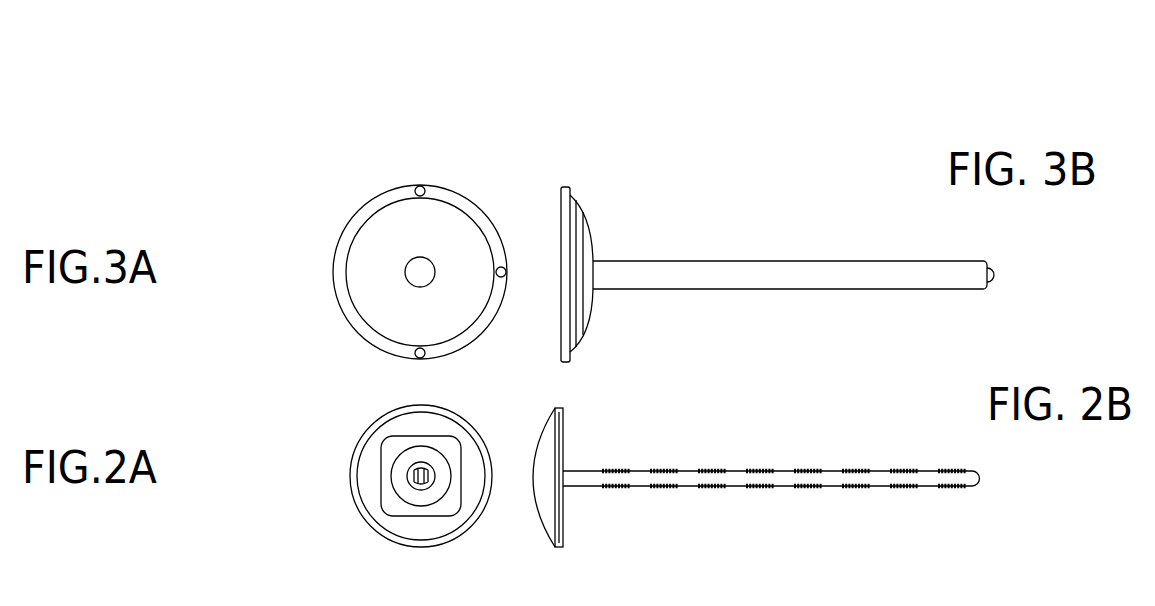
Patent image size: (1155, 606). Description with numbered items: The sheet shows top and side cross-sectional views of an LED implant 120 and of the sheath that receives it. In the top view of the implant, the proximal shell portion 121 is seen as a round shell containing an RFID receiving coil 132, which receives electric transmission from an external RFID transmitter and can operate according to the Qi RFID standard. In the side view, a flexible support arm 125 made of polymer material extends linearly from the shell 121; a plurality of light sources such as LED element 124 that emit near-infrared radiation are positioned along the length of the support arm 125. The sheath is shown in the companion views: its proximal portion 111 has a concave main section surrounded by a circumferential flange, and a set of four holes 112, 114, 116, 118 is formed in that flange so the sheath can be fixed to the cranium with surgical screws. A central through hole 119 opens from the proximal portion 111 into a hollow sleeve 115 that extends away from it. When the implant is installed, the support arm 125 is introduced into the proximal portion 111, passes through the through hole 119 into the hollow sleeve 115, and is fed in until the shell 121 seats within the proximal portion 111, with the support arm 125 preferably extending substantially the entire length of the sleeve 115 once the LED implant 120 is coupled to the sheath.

In FIG. 3B, the proximal portion of the sheath 111 is at (587, 221).
In FIG. 3A, the hole 112 is at (424, 187).
In FIG. 3A, the hole 114 is at (338, 274).
In FIG. 3B, the hollow sleeve 115 is at (755, 259).
In FIG. 3A, the hole 116 is at (420, 357).
In FIG. 3A, the hole 118 is at (503, 268).
In FIG. 3A, the through hole 119 is at (417, 269).
In FIG. 3B, the LED implant 120 is at (607, 113).
In FIG. 2A, the proximal shell portion 121 is at (366, 420).
In FIG. 2B, the proximal shell portion 121 is at (567, 528).
In FIG. 2B, the LED element 124 is at (712, 467).
In FIG. 2B, the support arm 125 is at (784, 467).
In FIG. 2A, the RFID receiving coil 132 is at (426, 443).
In FIG. 2B, the RFID receiving coil 132 is at (559, 461).